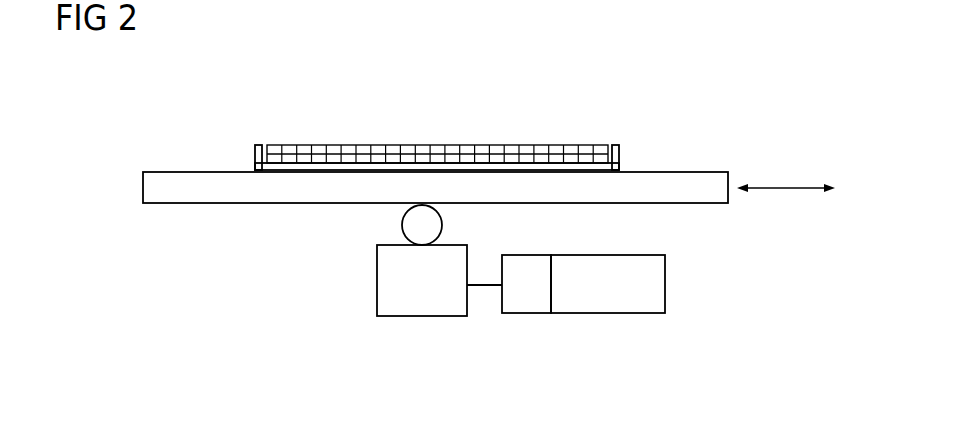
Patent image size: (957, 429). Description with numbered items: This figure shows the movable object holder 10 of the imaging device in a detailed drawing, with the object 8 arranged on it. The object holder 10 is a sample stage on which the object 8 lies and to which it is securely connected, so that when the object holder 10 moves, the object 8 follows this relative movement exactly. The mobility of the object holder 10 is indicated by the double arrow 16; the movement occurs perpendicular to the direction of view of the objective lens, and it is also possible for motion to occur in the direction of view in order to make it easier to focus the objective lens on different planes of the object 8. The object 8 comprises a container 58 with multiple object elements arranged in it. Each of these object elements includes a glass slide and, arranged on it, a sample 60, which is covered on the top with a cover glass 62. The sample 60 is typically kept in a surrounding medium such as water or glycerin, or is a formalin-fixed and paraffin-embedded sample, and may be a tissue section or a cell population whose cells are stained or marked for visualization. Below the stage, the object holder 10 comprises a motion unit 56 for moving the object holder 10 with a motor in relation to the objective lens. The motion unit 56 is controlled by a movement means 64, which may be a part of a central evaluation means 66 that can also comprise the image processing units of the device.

The object 8 is at (418, 102).
The object holder 10 is at (687, 180).
The double arrow 16 is at (792, 187).
The motion unit 56 is at (412, 298).
The container 58 is at (250, 158).
The sample 60 is at (382, 157).
The cover glass 62 is at (513, 145).
The movement means 64 is at (527, 302).
The central evaluation means 66 is at (630, 302).